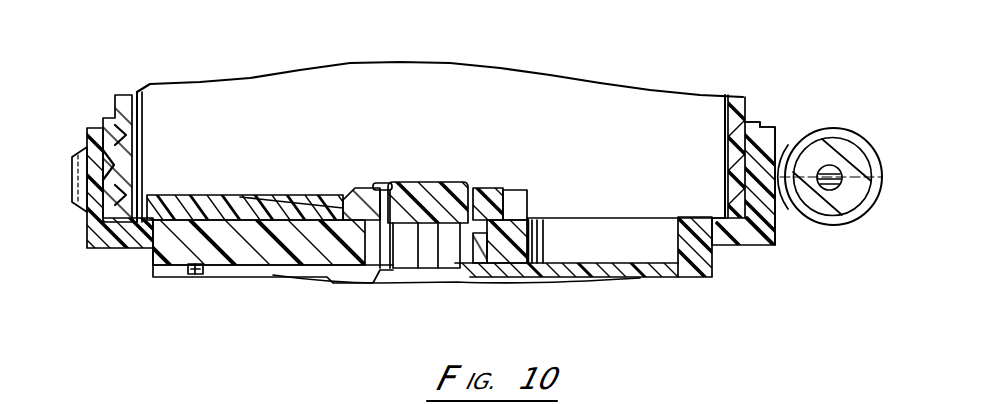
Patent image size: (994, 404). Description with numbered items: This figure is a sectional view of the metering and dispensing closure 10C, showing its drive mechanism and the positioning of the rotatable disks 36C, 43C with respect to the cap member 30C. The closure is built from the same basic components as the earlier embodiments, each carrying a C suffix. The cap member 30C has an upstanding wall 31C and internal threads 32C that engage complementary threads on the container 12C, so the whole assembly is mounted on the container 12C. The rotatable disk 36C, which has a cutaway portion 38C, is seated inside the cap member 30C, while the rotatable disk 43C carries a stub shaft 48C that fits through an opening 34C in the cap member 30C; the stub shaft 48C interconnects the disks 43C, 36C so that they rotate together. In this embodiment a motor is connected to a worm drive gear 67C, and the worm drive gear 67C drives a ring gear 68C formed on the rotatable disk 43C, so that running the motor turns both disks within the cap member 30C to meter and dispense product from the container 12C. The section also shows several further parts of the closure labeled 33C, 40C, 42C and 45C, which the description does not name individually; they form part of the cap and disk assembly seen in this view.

The metering and dispensing closure 10C is at (770, 268).
The container 12C is at (117, 97).
The cap member 30C is at (267, 247).
The upstanding wall 31C is at (750, 135).
The internal threads 32C is at (140, 158).
The flange 33C is at (677, 233).
The opening 34C is at (462, 274).
The rotatable disk 36C is at (217, 196).
The cutaway portion 38C is at (515, 207).
The pin 40C is at (390, 183).
The collar 42C is at (502, 191).
The rotatable disk 43C is at (157, 275).
The fastener 45C is at (200, 278).
The stub shaft 48C is at (433, 180).
The worm drive gear 67C is at (870, 147).
The ring gear 68C is at (785, 148).